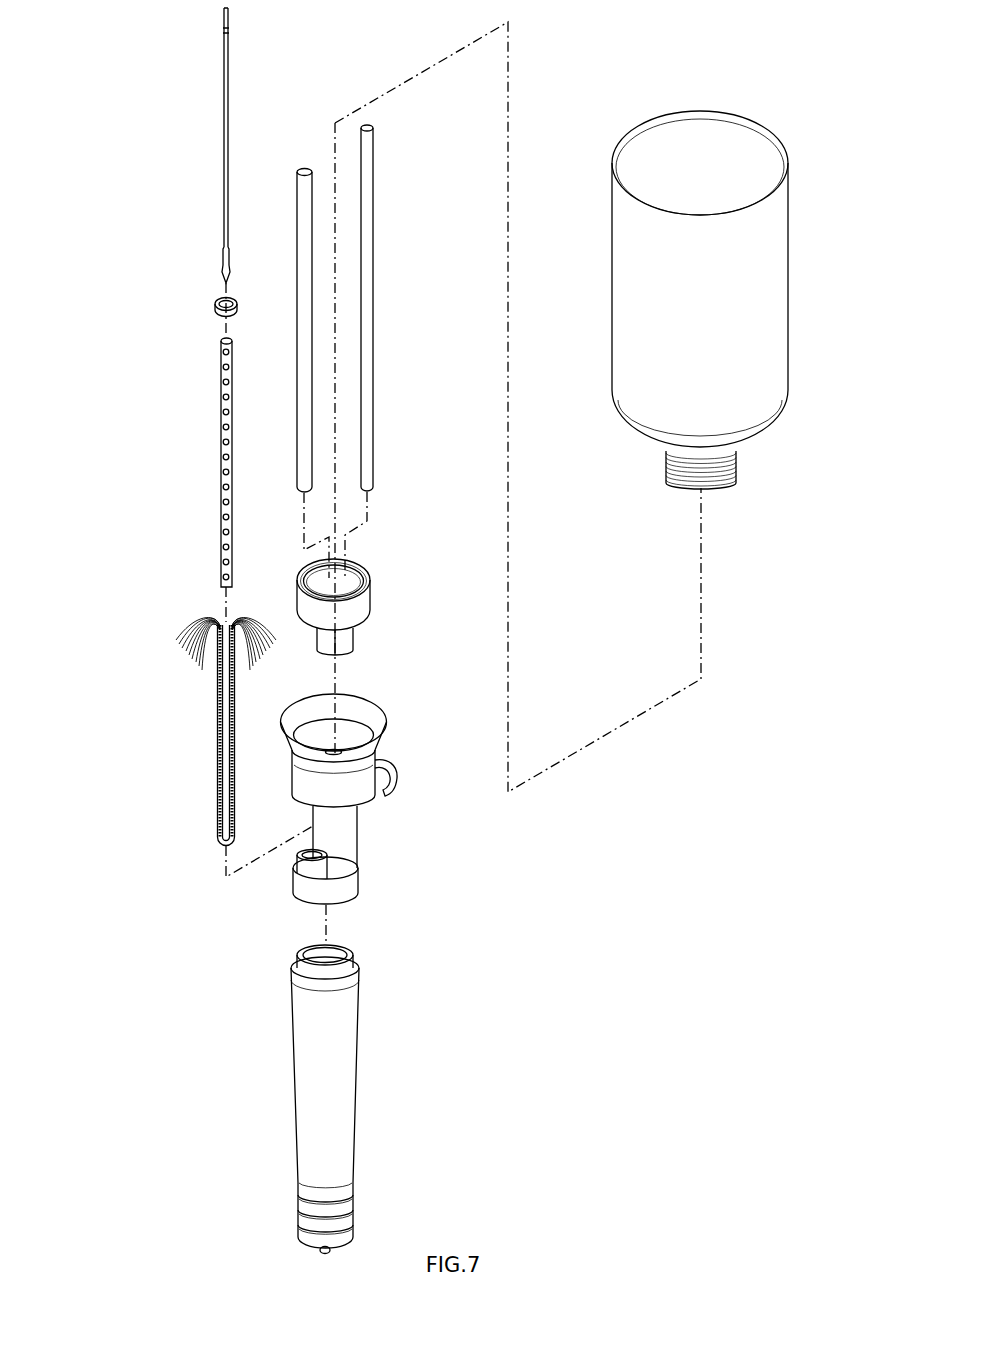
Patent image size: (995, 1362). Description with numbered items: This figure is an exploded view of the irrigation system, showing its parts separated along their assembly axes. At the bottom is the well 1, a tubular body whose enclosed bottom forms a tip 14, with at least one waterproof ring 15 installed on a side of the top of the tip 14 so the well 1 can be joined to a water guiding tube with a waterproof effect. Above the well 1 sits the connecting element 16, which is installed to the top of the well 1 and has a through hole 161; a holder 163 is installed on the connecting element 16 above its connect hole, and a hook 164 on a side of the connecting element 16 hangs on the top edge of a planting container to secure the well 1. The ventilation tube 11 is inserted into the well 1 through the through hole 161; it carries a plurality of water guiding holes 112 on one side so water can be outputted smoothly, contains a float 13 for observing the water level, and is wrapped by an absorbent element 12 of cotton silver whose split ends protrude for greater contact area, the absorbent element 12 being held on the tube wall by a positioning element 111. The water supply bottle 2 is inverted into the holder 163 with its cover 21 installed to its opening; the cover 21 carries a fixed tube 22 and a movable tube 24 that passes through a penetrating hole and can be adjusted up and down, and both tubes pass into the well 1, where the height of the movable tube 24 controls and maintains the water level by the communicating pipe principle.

The well 1 is at (350, 1075).
The water supply bottle 2 is at (772, 150).
The ventilation tube 11 is at (225, 405).
The positioning element 111 is at (215, 311).
The water guiding holes 112 is at (225, 483).
The absorbent element 12 is at (218, 745).
The float 13 is at (226, 158).
The tip 14 is at (322, 1254).
The waterproof ring 15 is at (300, 1195).
The connecting element 16 is at (340, 826).
The through hole 161 is at (318, 850).
The holder 163 is at (372, 715).
The hook 164 is at (392, 775).
The cover 21 is at (350, 605).
The fixed tube 22 is at (302, 190).
The movable tube 24 is at (372, 272).